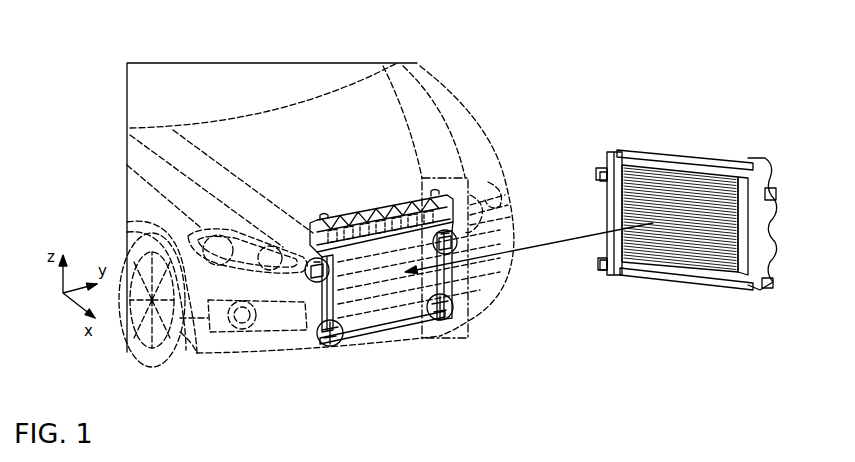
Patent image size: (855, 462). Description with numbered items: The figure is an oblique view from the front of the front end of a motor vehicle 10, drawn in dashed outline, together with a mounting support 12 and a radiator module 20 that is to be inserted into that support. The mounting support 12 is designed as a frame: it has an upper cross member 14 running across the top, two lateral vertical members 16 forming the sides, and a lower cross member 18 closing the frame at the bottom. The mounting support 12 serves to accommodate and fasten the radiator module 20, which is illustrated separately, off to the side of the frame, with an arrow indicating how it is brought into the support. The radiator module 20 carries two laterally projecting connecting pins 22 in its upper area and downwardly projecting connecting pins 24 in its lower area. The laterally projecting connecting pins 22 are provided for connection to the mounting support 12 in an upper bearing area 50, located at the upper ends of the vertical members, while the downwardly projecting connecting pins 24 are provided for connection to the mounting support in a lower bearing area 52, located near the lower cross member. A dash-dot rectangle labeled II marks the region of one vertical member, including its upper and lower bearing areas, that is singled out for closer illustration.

The motor vehicle 10 is at (475, 85).
The mounting support 12 is at (387, 213).
The upper cross member 14 is at (358, 233).
The lateral vertical members 16 is at (317, 291).
The lower cross member 18 is at (390, 318).
The radiator module 20 is at (695, 185).
The laterally projecting connecting pins 22 is at (772, 195).
The downwardly projecting connecting pins 24 is at (770, 283).
The upper bearing area 50 is at (309, 277).
The lower bearing area 52 is at (433, 318).
The detail region II is at (432, 178).